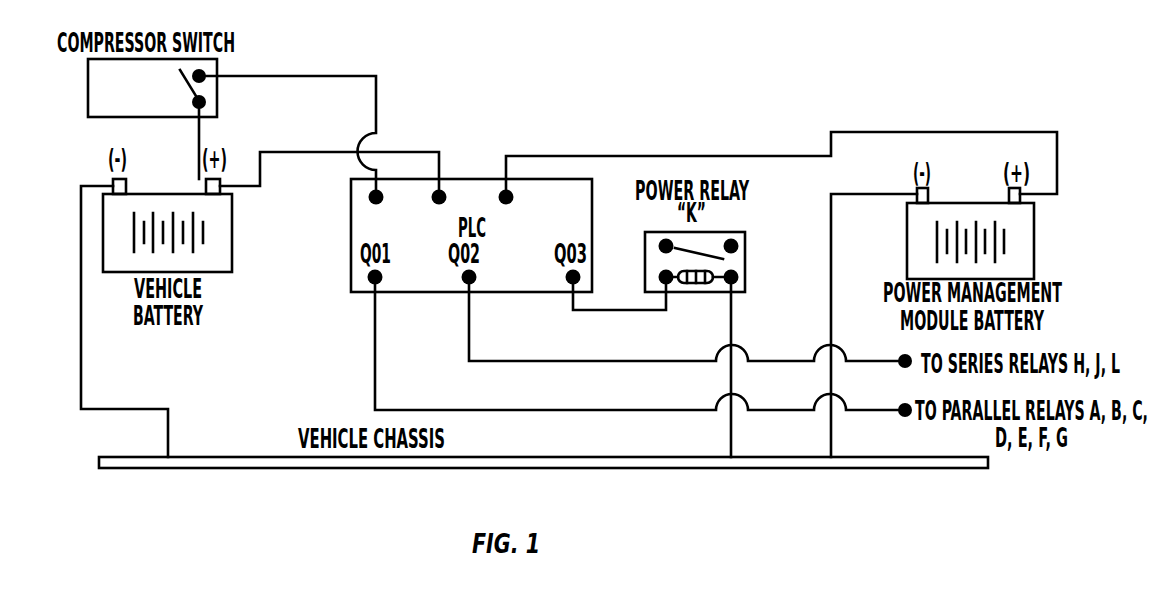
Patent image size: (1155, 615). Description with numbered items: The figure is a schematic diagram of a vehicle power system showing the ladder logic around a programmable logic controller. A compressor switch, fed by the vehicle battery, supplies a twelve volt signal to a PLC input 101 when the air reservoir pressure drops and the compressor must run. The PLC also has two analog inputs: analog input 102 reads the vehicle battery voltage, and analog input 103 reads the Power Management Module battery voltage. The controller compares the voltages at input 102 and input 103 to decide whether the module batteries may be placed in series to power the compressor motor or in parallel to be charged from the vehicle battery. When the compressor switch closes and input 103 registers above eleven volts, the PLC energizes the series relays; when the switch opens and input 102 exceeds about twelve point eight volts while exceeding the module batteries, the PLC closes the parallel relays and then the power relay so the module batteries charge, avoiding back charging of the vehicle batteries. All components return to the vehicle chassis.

The PLC input terminal 101 (compressor switch input) 101 is at (393, 198).
The analog PLC input 102 is at (455, 198).
The analog PLC input 103 is at (778, 172).